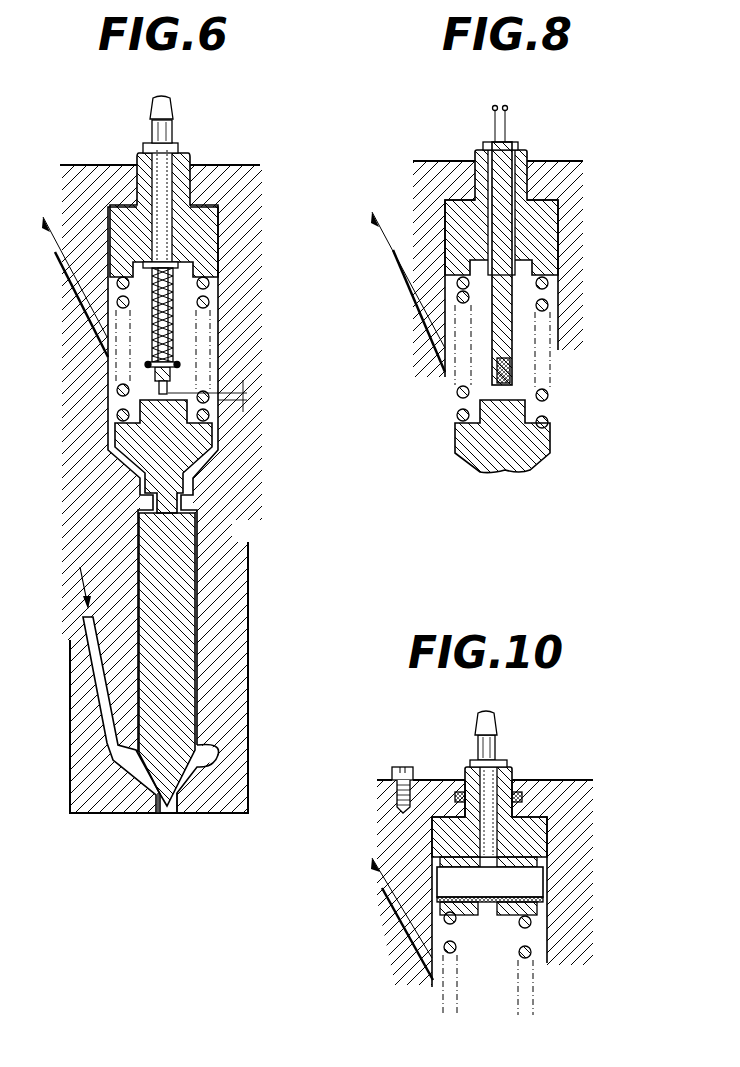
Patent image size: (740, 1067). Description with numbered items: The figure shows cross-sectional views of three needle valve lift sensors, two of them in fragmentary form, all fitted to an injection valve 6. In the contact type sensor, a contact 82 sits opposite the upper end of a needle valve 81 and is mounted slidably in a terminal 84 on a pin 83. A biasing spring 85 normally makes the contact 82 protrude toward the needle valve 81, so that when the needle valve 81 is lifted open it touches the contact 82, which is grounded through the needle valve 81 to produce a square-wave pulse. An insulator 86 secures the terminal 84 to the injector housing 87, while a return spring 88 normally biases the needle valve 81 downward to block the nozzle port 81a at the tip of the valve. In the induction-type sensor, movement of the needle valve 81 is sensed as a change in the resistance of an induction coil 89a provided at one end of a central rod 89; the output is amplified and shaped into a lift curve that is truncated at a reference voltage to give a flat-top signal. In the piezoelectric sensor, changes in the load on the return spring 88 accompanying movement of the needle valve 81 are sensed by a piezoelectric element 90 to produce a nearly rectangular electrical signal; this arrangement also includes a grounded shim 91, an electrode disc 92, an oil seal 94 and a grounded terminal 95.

In FIG. 6, the injection valve 6 is at (70, 163).
In FIG. 8, the injection valve 6 is at (437, 159).
In FIG. 10, the injection valve 6 is at (436, 778).
In FIG. 6, the needle valve 81 is at (195, 445).
In FIG. 8, the needle valve 81 is at (530, 440).
In FIG. 6, the nozzle port 81a is at (170, 818).
In FIG. 6, the contact 82 is at (172, 352).
In FIG. 6, the pin 83 is at (178, 364).
In FIG. 6, the terminal 84 is at (173, 113).
In FIG. 10, the terminal 84 is at (497, 735).
In FIG. 6, the biasing spring 85 is at (172, 300).
In FIG. 6, the insulator 86 is at (195, 228).
In FIG. 8, the insulator 86 is at (540, 230).
In FIG. 10, the insulator 86 is at (512, 773).
In FIG. 6, the injector housing 87 is at (210, 172).
In FIG. 8, the injector housing 87 is at (548, 180).
In FIG. 10, the injector housing 87 is at (560, 830).
In FIG. 6, the return spring 88 is at (120, 372).
In FIG. 8, the return spring 88 is at (462, 378).
In FIG. 10, the return spring 88 is at (533, 968).
In FIG. 8, the central rod 89 is at (510, 333).
In FIG. 8, the induction coil 89a is at (508, 368).
In FIG. 10, the piezoelectric element 90 is at (528, 885).
In FIG. 10, the grounded shim 91 is at (528, 907).
In FIG. 10, the electrode disc 92 is at (550, 853).
In FIG. 10, the oil seal 94 is at (525, 800).
In FIG. 10, the grounded terminal 95 is at (397, 768).